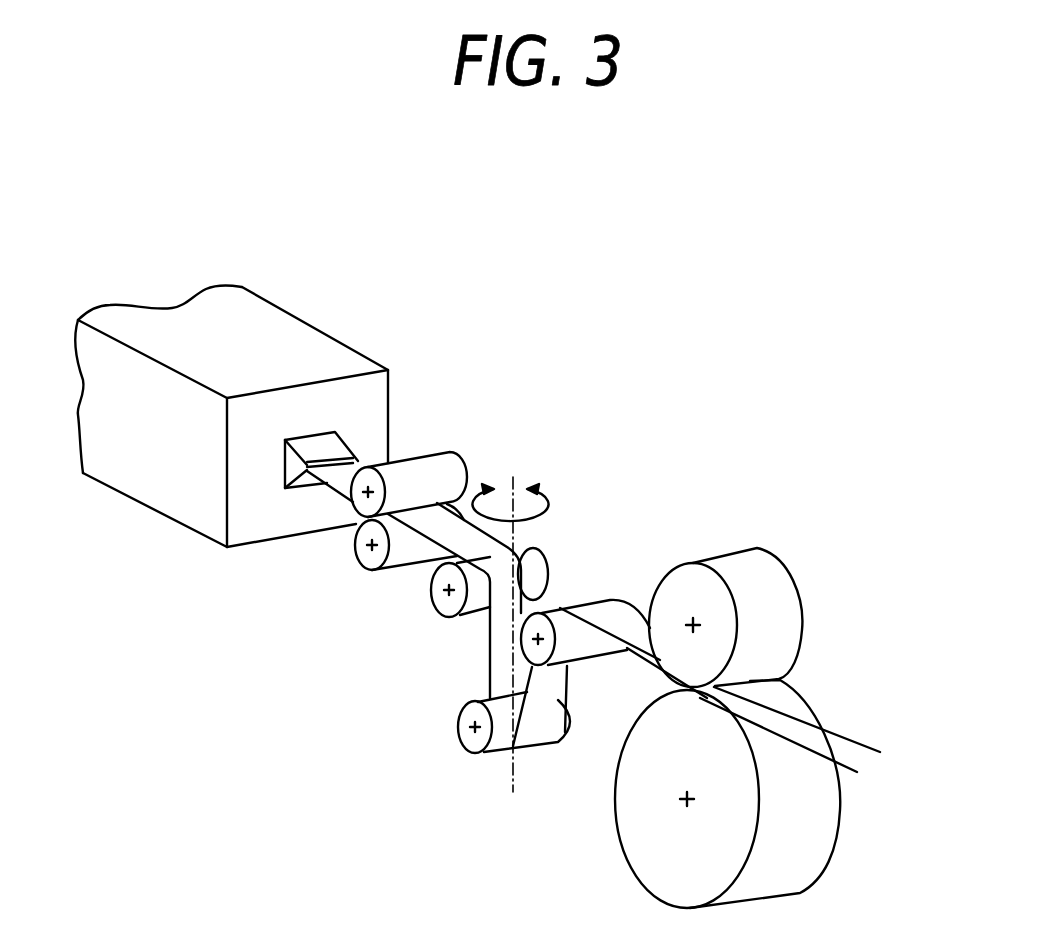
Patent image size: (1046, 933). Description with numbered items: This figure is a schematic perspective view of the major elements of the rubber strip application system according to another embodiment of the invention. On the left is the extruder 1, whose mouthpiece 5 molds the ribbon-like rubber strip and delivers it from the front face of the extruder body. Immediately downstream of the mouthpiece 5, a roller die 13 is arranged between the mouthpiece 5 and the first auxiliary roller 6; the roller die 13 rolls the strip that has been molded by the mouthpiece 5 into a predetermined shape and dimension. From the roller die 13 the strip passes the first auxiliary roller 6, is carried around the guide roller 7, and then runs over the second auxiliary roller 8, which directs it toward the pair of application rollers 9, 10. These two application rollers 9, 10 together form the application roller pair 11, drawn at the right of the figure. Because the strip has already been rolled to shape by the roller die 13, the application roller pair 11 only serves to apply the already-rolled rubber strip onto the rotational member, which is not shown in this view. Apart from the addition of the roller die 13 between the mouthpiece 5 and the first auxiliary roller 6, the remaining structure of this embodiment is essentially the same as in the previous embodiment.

The extruder 1 is at (340, 321).
The mouthpiece 5 is at (327, 444).
The roller die 13 is at (474, 486).
The first auxiliary roller 6 is at (538, 550).
The second auxiliary roller 8 is at (610, 598).
The guide roller 7 is at (480, 750).
The application roller 10 is at (737, 568).
The application roller 9 is at (652, 856).
The application roller pair 11 is at (824, 654).